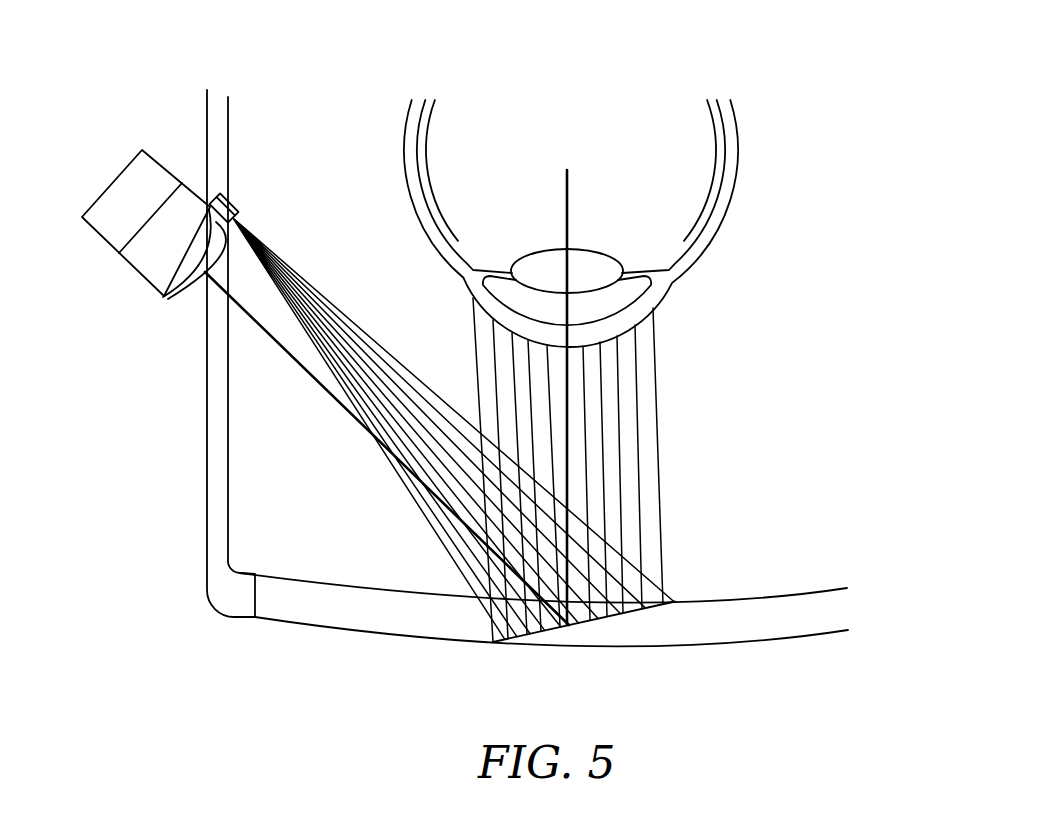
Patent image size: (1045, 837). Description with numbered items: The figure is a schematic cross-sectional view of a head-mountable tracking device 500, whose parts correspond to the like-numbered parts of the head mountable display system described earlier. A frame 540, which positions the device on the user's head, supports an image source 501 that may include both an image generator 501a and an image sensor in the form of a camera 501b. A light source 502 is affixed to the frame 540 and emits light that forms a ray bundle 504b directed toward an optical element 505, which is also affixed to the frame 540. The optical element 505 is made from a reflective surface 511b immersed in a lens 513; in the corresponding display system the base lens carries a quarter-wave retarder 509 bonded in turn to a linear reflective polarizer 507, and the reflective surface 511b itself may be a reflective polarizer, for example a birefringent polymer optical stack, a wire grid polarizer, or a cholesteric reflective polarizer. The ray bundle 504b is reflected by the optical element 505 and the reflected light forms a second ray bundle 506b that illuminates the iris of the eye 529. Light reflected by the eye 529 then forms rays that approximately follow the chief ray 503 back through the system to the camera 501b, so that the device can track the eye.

The head-mountable tracking device 500 is at (188, 45).
The eye 529 is at (369, 106).
The frame 540 is at (207, 116).
The image source 501 is at (100, 168).
The image generator 501a is at (102, 220).
The camera 501b is at (143, 262).
The light source 502 is at (236, 212).
The chief ray 503 is at (265, 340).
The ray bundle 504b is at (366, 386).
The ray bundle 506b is at (619, 397).
The linear reflective polarizer 507 is at (810, 592).
The quarter-wave retarder 509 is at (822, 592).
The lens 513 is at (376, 614).
The reflective surface 511b is at (585, 628).
The optical element 505 is at (288, 668).